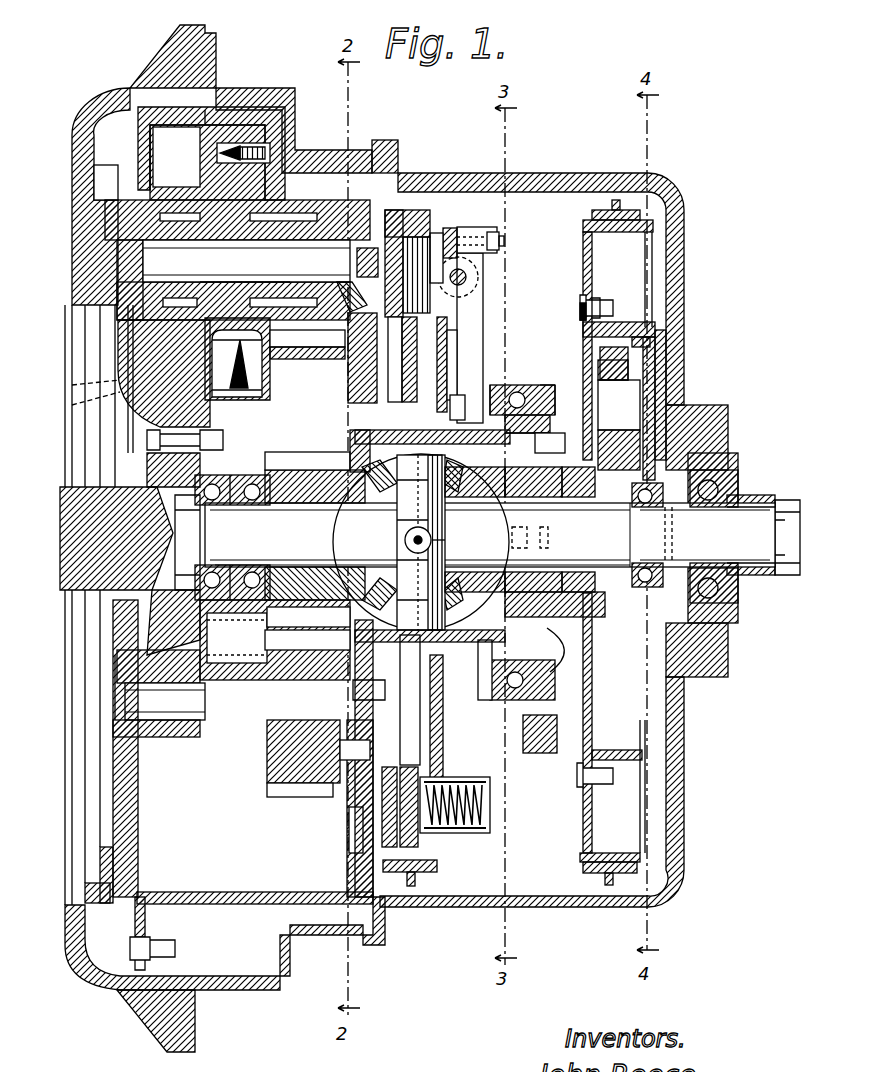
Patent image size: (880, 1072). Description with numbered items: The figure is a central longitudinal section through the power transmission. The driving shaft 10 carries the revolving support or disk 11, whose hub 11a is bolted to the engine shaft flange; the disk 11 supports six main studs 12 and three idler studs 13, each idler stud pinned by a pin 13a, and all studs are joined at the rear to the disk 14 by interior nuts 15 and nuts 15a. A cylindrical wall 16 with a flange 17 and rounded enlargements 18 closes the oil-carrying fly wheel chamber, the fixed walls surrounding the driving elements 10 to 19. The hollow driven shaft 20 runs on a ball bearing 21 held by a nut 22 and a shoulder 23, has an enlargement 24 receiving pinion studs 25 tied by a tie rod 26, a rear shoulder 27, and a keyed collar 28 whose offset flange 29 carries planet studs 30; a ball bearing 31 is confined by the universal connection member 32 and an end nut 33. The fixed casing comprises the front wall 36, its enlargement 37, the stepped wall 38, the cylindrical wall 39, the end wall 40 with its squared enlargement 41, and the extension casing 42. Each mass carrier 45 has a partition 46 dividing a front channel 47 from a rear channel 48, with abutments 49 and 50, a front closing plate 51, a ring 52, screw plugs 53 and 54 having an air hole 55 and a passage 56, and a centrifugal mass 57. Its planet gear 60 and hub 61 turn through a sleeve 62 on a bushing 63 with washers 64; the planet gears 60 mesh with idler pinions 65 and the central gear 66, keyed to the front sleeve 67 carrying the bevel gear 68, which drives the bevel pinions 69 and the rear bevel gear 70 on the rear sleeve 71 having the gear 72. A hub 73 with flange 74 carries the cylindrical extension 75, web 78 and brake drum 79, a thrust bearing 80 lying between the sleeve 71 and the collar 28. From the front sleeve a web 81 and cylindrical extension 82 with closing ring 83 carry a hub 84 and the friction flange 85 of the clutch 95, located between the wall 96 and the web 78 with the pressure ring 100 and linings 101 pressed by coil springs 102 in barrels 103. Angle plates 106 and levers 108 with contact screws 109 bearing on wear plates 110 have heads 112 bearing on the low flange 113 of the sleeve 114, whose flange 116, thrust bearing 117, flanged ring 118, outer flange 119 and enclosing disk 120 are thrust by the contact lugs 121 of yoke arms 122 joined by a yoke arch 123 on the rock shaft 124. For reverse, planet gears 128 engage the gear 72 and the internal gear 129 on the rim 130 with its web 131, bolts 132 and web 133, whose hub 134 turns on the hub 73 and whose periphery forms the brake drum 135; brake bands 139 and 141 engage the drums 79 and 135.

The shaft 10 is at (68, 487).
The revolving support or disk 11 is at (125, 362).
The hub 11a is at (200, 737).
The main studs 12 is at (110, 235).
The idler studs 13 is at (135, 697).
The pin 13a is at (198, 665).
The circular wall or disk 14 is at (350, 370).
The interior nuts 15 is at (357, 262).
The nuts 15a is at (362, 690).
The wall 16 is at (305, 160).
The flange 17 is at (148, 918).
The rounded enlargements 18 is at (215, 110).
The driving element 19 is at (85, 893).
The driven shaft 20 is at (490, 535).
The ball bearing 21 is at (232, 537).
The nut 22 is at (187, 542).
The shoulder 23 is at (245, 505).
The enlargement 24 is at (409, 540).
The pinion studs 25 is at (397, 512).
The tie rod or rivet 26 is at (444, 540).
The rear shoulder 27 is at (630, 540).
The collar 28 is at (712, 500).
The offset flange 29 is at (660, 380).
The planet studs 30 is at (619, 415).
The ball bearing 31 is at (705, 563).
The member 32 is at (748, 495).
The end nut 33 is at (788, 500).
The front wall 36 is at (80, 118).
The enlargement 37 is at (175, 52).
The stepped wall 38 is at (300, 90).
The cylindrical enclosing wall 39 is at (528, 173).
The end wall 40 is at (684, 255).
The squared enlargement 41 is at (728, 420).
The extension casing 42 is at (738, 455).
The mass carriers 45 is at (238, 125).
The transverse partition 46 is at (233, 364).
The front channel 47 is at (152, 140).
The rear channel 48 is at (237, 369).
The abutment or thruster 49 is at (213, 348).
The abutment or thruster 50 is at (285, 120).
The front closing plate 51 is at (152, 152).
The surrounding ring 52 is at (255, 395).
The screw plug 53 is at (200, 400).
The screw plug 54 is at (270, 152).
The lateral air hole 55 is at (81, 384).
The longitudinal passage 56 is at (81, 403).
The centrifugal mass 57 is at (176, 157).
The planet gear 60 is at (295, 347).
The hub 61 is at (322, 347).
The sleeve 62 is at (178, 300).
The perforated hollow bushing 63 is at (210, 300).
The positioning washers 64 is at (340, 290).
The idler pinions 65 is at (267, 790).
The central gear 66 is at (267, 620).
The sleeve 67 is at (275, 485).
The bevel gear 68 is at (370, 495).
The bevel pinions 69 is at (388, 470).
The rear bevel gear 70 is at (465, 498).
The rear sleeve 71 is at (550, 592).
The gear 72 is at (596, 500).
The hub 73 is at (580, 592).
The flange 74 is at (493, 572).
The cylindrical extension 75 is at (481, 670).
The web or spokes 78 is at (445, 755).
The braking extension 79 is at (455, 228).
The thrust bearing 80 is at (655, 505).
The flange or web 81 is at (345, 448).
The cylindrical extension 82 is at (352, 435).
The closing ring 83 is at (462, 468).
The hub 84 is at (415, 365).
The outward flange or web 85 is at (408, 352).
The clutch 95 is at (395, 330).
The inwardly extending wall 96 is at (407, 254).
The pressure ring 100 is at (436, 233).
The friction linings or rings 101 is at (415, 237).
The coil springs 102 is at (440, 845).
The cylindrical barrel 103 is at (458, 835).
The angle plates 106 is at (452, 290).
The levers 108 is at (483, 295).
The contact screw 109 is at (504, 241).
The wear plates 110 is at (477, 230).
The head 112 is at (471, 407).
The low flange 113 is at (455, 390).
The sleeve 114 is at (540, 425).
The flange 116 is at (542, 412).
The thrust bearing 117 is at (508, 385).
The double flanged ring 118 is at (525, 385).
The outer flange 119 is at (557, 375).
The enclosing disk 120 is at (567, 397).
The contact lugs 121 is at (512, 526).
The yoke arms 122 is at (560, 526).
The yoke arch 123 is at (545, 753).
The rock shaft 124 is at (558, 660).
The planet gears 128 is at (660, 350).
The internal gear 129 is at (615, 345).
The rim 130 is at (655, 322).
The web or disk 131 is at (650, 342).
The bolts 132 is at (578, 302).
The web 133 is at (583, 272).
The foot or hub 134 is at (545, 453).
The brake drum 135 is at (583, 225).
The brake band 139 is at (415, 880).
The brake band 141 is at (600, 876).